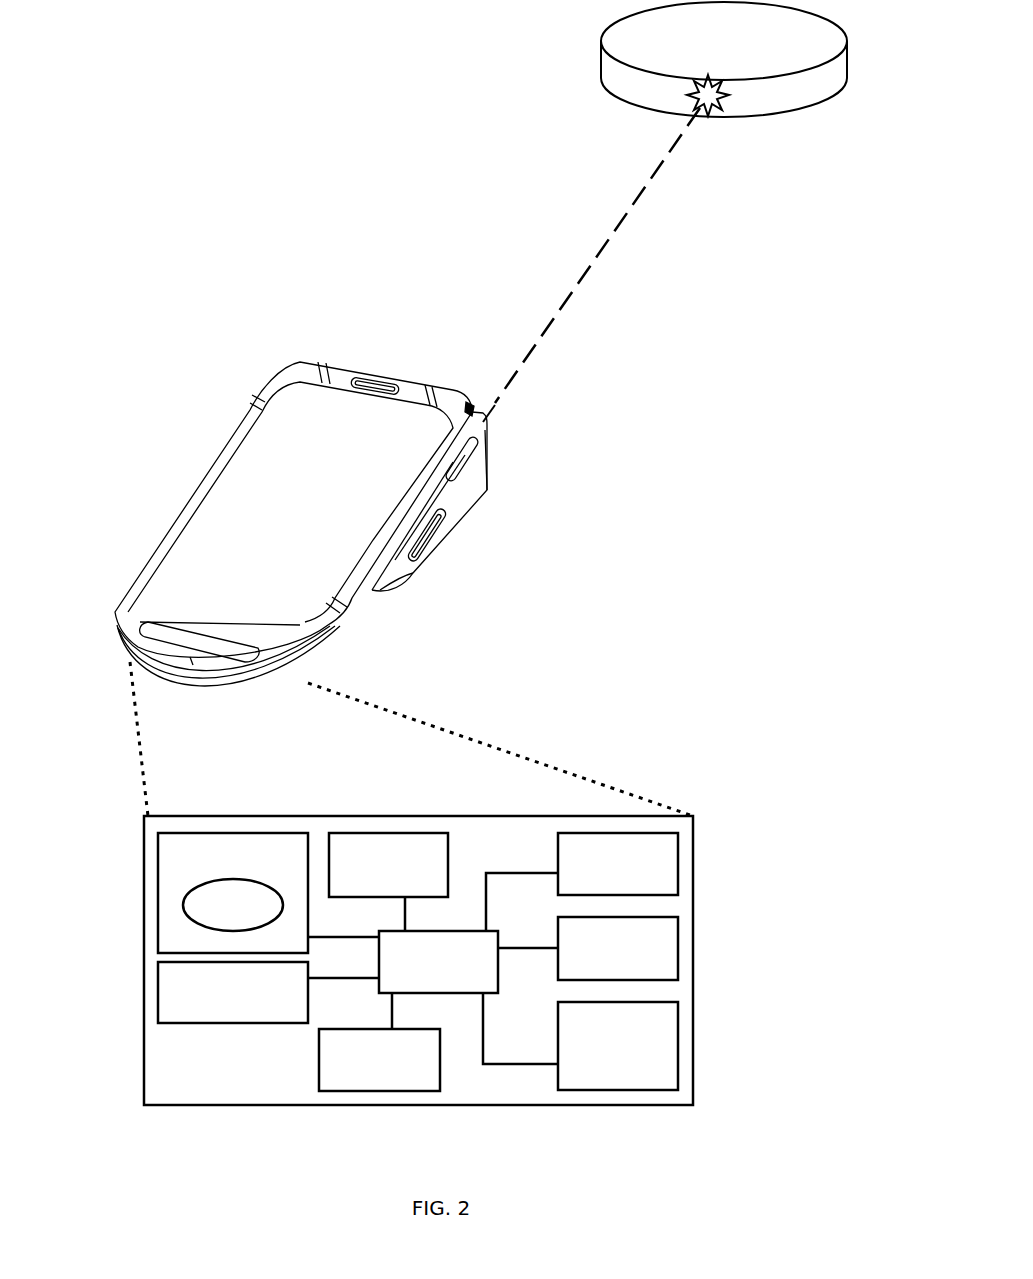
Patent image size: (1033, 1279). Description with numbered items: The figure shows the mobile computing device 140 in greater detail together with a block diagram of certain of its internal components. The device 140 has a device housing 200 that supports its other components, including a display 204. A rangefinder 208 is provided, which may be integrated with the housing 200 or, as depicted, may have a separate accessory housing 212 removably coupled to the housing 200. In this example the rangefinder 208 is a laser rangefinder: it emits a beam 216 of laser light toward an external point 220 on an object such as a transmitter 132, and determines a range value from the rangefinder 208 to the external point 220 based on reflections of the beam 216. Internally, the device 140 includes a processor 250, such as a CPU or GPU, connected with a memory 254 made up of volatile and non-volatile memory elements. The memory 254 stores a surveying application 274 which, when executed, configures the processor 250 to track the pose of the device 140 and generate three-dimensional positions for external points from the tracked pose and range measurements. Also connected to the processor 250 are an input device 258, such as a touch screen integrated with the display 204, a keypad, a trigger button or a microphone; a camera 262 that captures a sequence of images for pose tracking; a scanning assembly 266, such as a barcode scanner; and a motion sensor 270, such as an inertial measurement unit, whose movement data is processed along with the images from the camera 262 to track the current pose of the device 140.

The transmitter 132 is at (600, 43).
The external point 220 is at (720, 102).
The beam 216 is at (597, 255).
The device 140 is at (255, 393).
The display 204 is at (269, 519).
The rangefinder 208 is at (485, 503).
The accessory housing 212 is at (473, 466).
The device housing 200 is at (347, 617).
The memory 254 is at (158, 893).
The surveying application 274 is at (214, 919).
The scanning assembly 266 is at (369, 864).
The processor 250 is at (419, 961).
The camera 262 is at (599, 864).
The input device 258 is at (599, 947).
The motion sensor 270 is at (599, 1032).